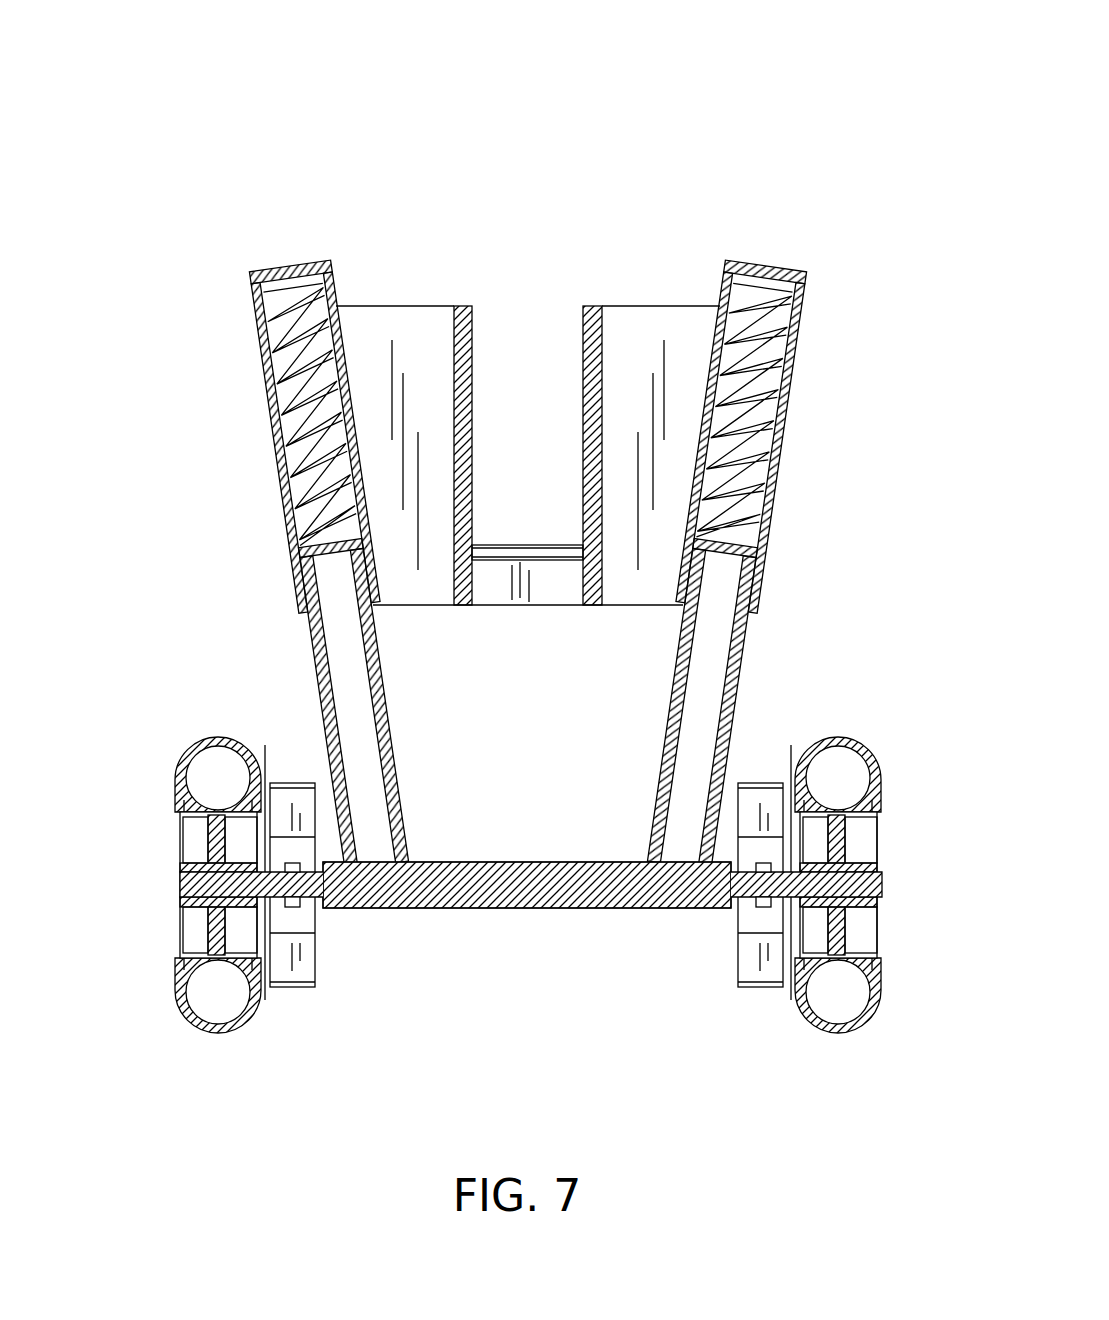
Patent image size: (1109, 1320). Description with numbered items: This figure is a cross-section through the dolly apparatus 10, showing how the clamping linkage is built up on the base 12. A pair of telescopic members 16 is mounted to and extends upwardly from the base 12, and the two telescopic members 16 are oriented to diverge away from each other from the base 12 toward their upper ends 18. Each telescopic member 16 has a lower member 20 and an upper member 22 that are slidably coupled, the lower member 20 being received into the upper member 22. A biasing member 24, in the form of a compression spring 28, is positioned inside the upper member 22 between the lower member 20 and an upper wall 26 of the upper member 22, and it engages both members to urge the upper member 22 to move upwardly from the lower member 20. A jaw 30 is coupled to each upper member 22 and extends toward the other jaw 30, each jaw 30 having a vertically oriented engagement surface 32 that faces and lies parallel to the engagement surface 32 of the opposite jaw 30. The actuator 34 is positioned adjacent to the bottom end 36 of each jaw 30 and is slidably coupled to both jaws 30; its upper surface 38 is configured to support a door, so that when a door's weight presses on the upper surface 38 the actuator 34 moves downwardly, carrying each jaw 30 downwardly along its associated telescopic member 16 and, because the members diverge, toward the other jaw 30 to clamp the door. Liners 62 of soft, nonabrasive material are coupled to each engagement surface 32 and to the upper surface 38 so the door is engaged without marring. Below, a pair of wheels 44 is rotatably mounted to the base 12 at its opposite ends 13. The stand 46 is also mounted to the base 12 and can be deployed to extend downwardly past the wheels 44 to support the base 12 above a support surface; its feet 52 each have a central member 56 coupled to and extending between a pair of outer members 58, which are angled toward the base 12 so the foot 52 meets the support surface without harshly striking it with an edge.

The dolly apparatus 10 is at (627, 137).
The base 12 is at (520, 908).
The opposite ends 13 is at (265, 1000).
The telescopic member 16 is at (217, 257).
The upper end 18 is at (262, 267).
The lower member 20 is at (322, 676).
The upper member 22 is at (270, 443).
The biasing member 24 is at (296, 378).
The upper wall 26 is at (298, 265).
The compression spring 28 is at (318, 515).
The jaw 30 is at (393, 340).
The engagement surface 32 is at (453, 383).
The actuator 34 is at (540, 583).
The bottom end 36 is at (413, 612).
The upper surface 38 is at (500, 557).
The wheel 44 is at (178, 760).
The stand 46 is at (717, 960).
The foot 52 is at (327, 1002).
The central member 56 is at (300, 920).
The outer member 58 is at (295, 800).
The liner 62 is at (473, 360).